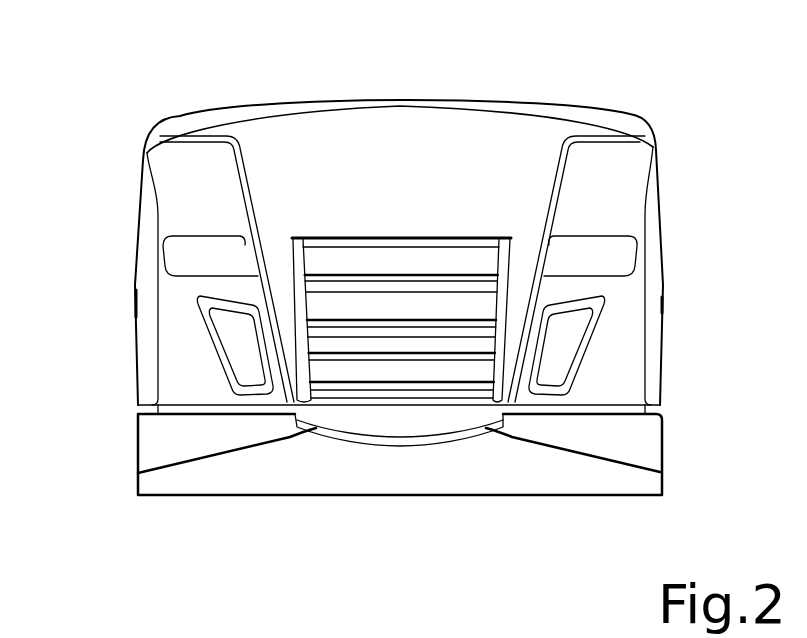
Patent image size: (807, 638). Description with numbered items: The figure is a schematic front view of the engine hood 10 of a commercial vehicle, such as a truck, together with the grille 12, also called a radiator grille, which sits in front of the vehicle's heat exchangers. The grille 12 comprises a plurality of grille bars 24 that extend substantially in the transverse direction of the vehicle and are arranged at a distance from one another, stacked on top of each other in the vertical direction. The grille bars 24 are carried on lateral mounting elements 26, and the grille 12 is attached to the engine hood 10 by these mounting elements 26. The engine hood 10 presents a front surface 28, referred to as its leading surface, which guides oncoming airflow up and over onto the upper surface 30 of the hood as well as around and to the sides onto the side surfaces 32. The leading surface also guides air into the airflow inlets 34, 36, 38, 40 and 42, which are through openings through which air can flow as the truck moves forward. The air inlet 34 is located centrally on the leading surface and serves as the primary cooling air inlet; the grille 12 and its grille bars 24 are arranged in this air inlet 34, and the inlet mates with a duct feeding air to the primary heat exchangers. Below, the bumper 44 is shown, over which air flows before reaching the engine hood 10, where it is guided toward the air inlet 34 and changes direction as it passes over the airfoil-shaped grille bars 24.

The engine hood 10 is at (610, 100).
The grille 12 is at (485, 223).
The grille bars 24 is at (357, 300).
The lateral mounting elements 26 is at (282, 255).
The front surface 28 is at (143, 153).
The upper surface 30 is at (410, 103).
The side surfaces 32 is at (167, 222).
The air inlet 34 is at (335, 410).
The airflow inlet 36 is at (218, 350).
The airflow inlet 38 is at (580, 350).
The airflow inlet 40 is at (210, 278).
The airflow inlet 42 is at (597, 260).
The bumper 44 is at (670, 453).